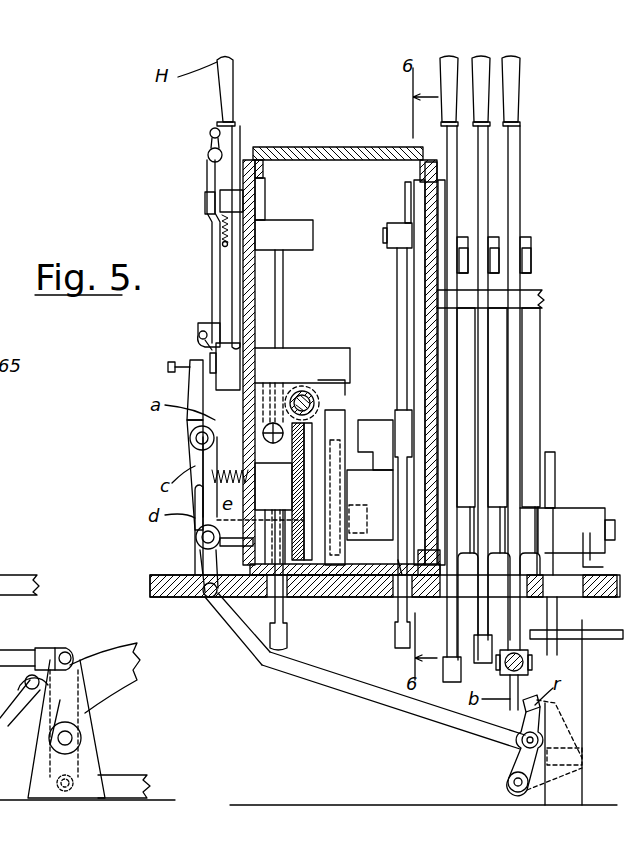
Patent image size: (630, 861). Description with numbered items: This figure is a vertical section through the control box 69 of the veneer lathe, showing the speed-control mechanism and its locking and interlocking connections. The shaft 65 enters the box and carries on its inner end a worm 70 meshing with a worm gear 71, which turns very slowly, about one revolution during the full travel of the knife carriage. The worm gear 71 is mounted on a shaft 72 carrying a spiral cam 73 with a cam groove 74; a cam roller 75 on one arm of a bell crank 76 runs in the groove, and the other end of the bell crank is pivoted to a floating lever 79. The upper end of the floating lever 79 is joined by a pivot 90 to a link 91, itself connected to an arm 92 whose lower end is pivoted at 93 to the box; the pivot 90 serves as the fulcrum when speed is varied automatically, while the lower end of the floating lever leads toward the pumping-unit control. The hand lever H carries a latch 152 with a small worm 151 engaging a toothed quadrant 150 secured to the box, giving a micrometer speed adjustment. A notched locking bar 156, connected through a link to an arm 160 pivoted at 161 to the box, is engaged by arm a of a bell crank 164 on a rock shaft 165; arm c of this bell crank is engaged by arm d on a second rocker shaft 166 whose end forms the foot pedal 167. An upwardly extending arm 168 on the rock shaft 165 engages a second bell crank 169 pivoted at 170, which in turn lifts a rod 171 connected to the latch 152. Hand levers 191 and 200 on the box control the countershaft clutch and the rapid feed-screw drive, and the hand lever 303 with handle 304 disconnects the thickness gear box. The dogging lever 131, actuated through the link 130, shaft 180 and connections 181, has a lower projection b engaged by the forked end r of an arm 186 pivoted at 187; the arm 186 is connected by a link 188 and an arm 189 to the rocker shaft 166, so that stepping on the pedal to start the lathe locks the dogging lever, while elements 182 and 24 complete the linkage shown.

The control box 69 is at (340, 136).
The latch 152 is at (223, 90).
The small worm 151 is at (208, 155).
The quadrant 150 is at (213, 193).
The rod 171 is at (212, 250).
The pivot 170 is at (200, 330).
The second bell crank 169 is at (210, 345).
The pivot 93 is at (190, 365).
The upwardly extending arm 168 is at (195, 388).
The rock shaft 165 is at (190, 437).
The bell crank 164 is at (184, 457).
The second rocker shaft 166 is at (196, 538).
The foot pedal 167 is at (240, 548).
The arm 189 is at (205, 597).
The arm 160 is at (279, 289).
The shaft 65 is at (304, 395).
The worm 70 is at (322, 390).
The locking bar 156 is at (266, 428).
The spiral cam 73 is at (338, 413).
The bell crank 76 is at (366, 538).
The link 91 is at (400, 208).
The pivot 90 is at (386, 235).
The arm 92 is at (396, 330).
The cam groove 74 is at (333, 560).
The cam roller 75 is at (370, 598).
The worm gear 71 is at (295, 594).
The hand lever 191 is at (450, 72).
The hand lever 200 is at (483, 93).
The dogging lever 131 is at (515, 110).
The floating lever 79 is at (405, 403).
The shaft 72 is at (360, 467).
The handle 304 is at (550, 482).
The hand lever 303 is at (588, 640).
The arm 186 is at (522, 750).
The pivot 187 is at (508, 785).
The link 188 is at (432, 712).
The pivot 161 is at (250, 660).
The intermediate connections 181 is at (10, 652).
The link 182 is at (130, 682).
The shaft 180 is at (82, 738).
The bar 24 is at (20, 730).
The link 130 is at (140, 787).